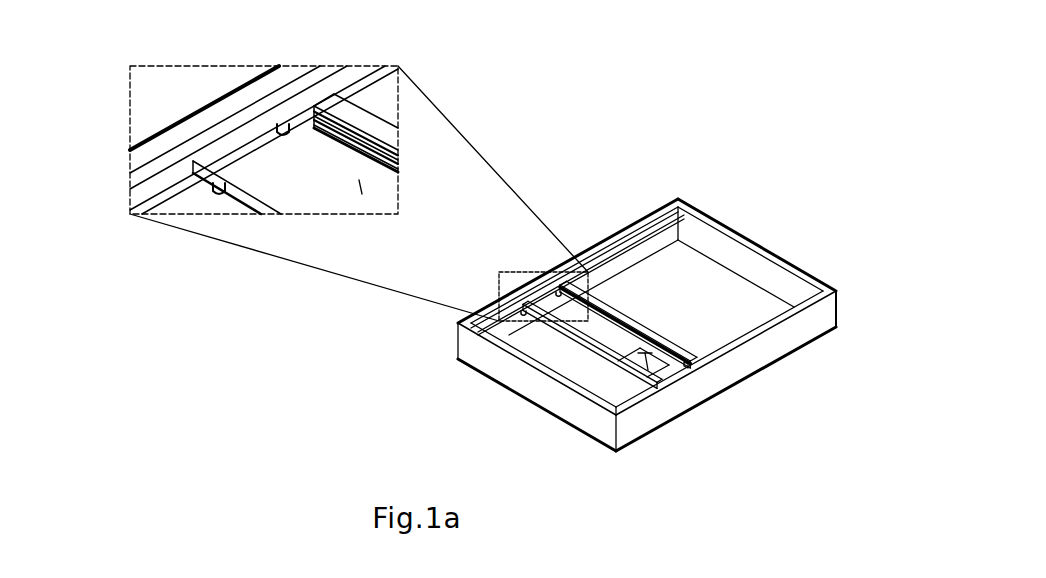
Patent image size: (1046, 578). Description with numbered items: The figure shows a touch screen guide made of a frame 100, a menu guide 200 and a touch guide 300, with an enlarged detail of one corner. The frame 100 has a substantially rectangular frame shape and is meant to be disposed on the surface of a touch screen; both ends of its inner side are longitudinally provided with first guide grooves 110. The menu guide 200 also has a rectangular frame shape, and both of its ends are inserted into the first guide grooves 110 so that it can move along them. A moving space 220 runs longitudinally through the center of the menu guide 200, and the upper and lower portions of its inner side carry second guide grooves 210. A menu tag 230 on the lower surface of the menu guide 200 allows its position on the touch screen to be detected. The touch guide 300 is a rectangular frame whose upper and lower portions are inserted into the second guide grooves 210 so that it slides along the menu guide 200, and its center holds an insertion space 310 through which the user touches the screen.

The frame 100 is at (210, 107).
The first guide grooves 110 is at (146, 195).
The menu guide 200 is at (361, 110).
The second guide grooves 210 is at (392, 130).
The moving space 220 is at (362, 186).
The menu tag 230 is at (222, 203).
The touch guide 300 is at (666, 361).
The insertion space 310 is at (648, 362).